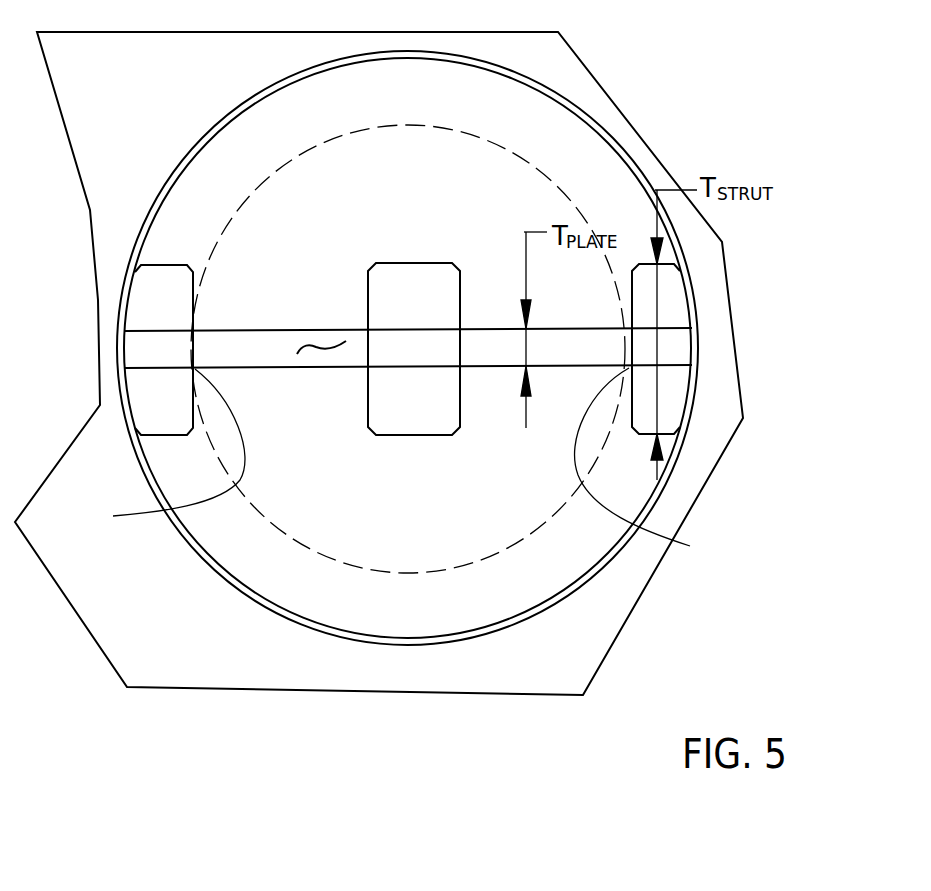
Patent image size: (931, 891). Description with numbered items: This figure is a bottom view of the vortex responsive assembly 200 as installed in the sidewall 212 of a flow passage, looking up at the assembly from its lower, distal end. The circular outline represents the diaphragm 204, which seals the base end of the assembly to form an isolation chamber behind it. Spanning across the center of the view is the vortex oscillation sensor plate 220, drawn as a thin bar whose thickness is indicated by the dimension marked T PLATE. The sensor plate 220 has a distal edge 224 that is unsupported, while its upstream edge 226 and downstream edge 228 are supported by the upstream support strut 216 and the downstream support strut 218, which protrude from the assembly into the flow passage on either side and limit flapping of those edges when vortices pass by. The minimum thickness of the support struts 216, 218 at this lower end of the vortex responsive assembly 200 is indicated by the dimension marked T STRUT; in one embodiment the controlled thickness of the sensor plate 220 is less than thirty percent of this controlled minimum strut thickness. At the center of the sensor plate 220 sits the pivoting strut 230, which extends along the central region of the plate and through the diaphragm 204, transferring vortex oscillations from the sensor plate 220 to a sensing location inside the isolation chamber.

The vortex responsive assembly 200 is at (595, 122).
The diaphragm 204 is at (428, 208).
The sidewall 212 is at (635, 132).
The upstream support strut 216 is at (124, 312).
The downstream support strut 218 is at (697, 318).
The vortex oscillation sensor plate 220 is at (331, 370).
The distal edge 224 is at (320, 345).
The upstream edge 226 is at (154, 451).
The downstream edge 228 is at (657, 464).
The pivoting strut 230 is at (432, 320).